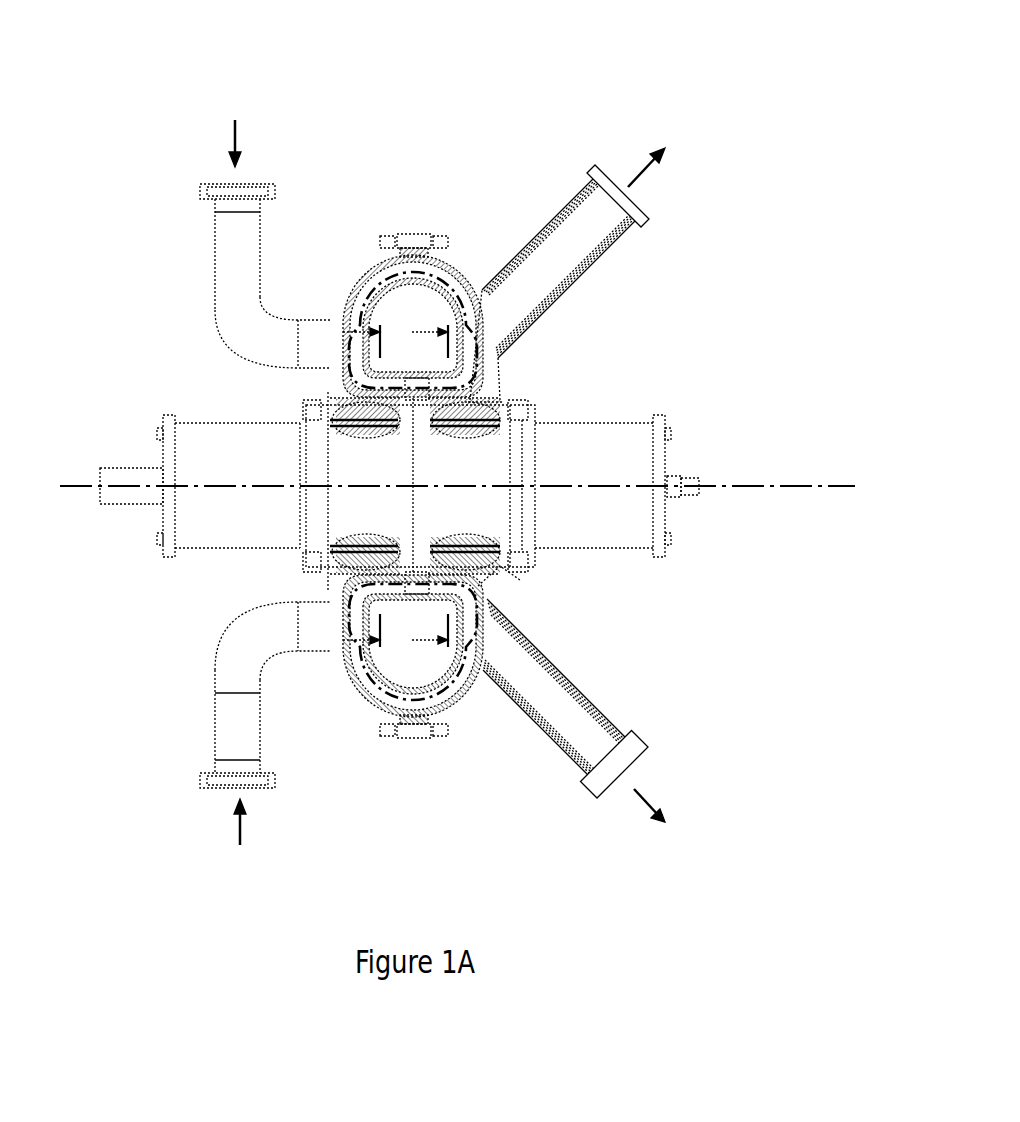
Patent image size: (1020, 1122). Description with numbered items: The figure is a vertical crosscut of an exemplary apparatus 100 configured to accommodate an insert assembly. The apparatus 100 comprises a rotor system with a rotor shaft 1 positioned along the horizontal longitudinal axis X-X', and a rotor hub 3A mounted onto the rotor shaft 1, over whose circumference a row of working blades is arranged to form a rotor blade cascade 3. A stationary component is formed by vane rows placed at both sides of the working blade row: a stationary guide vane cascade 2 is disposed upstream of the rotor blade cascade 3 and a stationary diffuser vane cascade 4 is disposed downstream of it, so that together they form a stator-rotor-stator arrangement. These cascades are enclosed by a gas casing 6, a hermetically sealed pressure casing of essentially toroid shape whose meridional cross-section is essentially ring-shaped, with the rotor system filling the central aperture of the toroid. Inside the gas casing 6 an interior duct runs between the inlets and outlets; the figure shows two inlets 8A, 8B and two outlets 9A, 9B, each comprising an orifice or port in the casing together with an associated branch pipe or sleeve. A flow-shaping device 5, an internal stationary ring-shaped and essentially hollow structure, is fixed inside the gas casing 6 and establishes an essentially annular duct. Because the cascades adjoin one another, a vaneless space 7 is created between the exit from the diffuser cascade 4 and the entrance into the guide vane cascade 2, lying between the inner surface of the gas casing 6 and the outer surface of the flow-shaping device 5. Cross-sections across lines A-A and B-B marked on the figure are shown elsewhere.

The apparatus 100 is at (842, 38).
The rotor shaft 1 is at (143, 477).
The stationary guide vane cascade 2 is at (350, 362).
The rotor blade cascade 3 is at (362, 310).
The rotor hub 3A is at (484, 596).
The stationary diffuser vane cascade 4 is at (473, 397).
The flow-shaping device 5 is at (358, 697).
The gas casing 6 is at (383, 715).
The vaneless space 7 is at (472, 257).
The inlet 8A is at (217, 185).
The inlet 8B is at (222, 793).
The outlet 9A is at (627, 772).
The outlet 9B is at (640, 205).